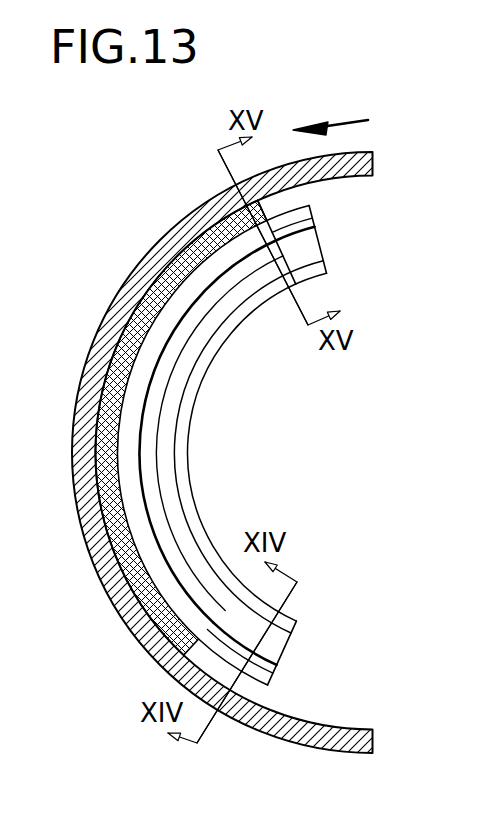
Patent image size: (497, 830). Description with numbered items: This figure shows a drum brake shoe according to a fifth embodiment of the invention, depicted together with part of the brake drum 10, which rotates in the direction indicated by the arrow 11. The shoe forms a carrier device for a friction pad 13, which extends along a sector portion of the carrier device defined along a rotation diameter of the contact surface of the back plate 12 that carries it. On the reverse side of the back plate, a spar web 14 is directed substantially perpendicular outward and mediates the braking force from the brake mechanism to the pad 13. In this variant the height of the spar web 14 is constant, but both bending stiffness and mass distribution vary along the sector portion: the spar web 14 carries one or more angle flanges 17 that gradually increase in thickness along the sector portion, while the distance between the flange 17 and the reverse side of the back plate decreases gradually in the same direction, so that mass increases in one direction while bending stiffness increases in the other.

The drum 10 is at (363, 729).
The arrow 11 is at (343, 118).
The back plate 12 is at (273, 665).
The friction pad 13 is at (183, 652).
The spar web 14 is at (323, 250).
The angle flange 17 is at (180, 473).